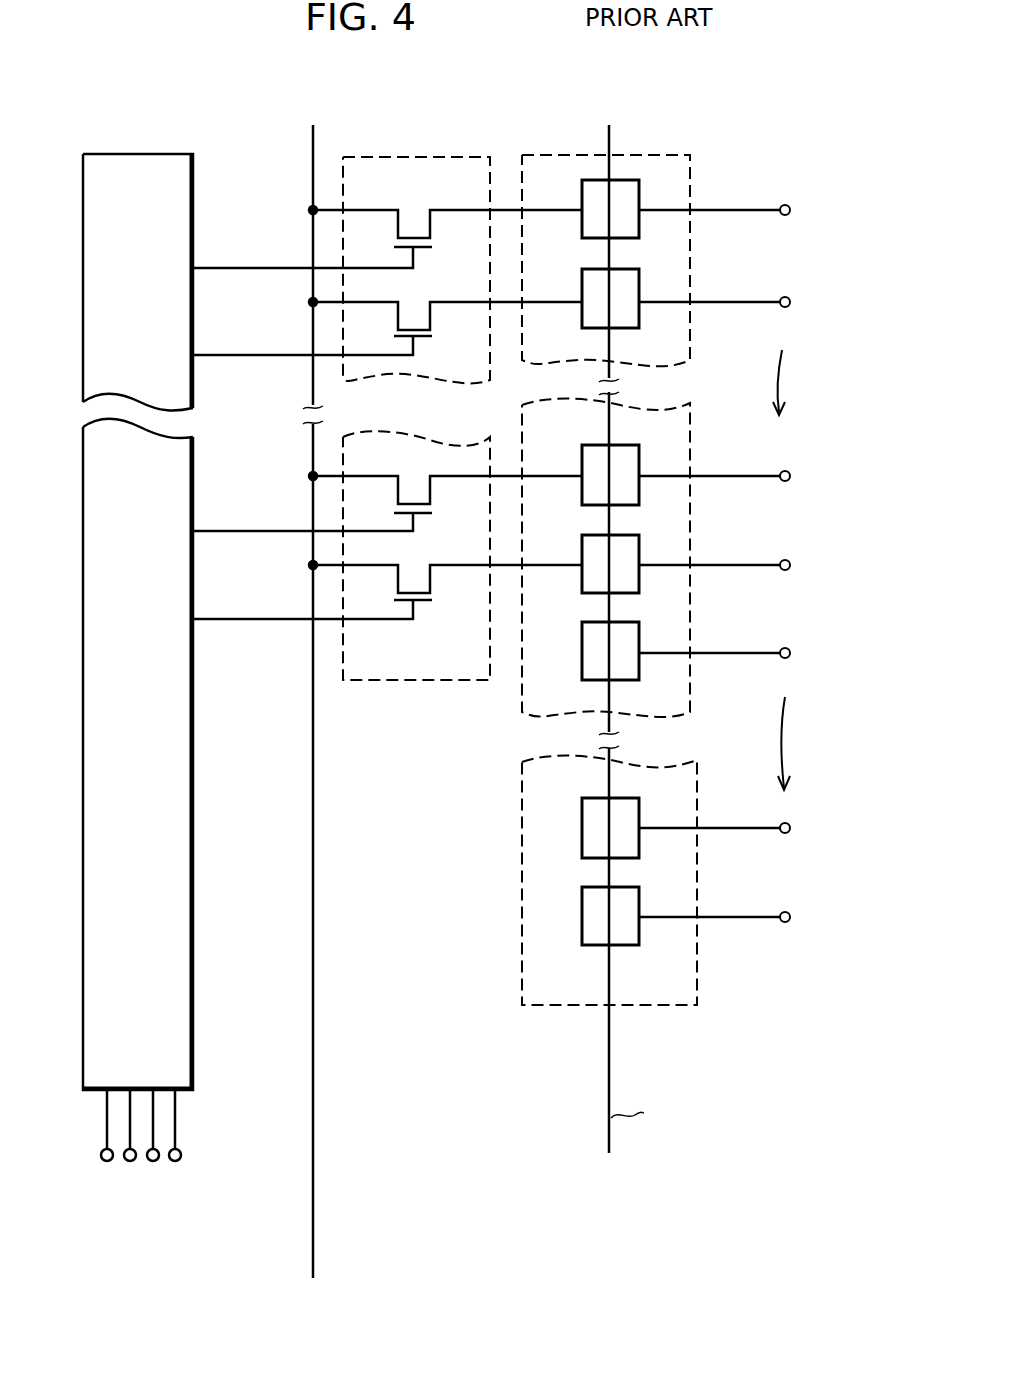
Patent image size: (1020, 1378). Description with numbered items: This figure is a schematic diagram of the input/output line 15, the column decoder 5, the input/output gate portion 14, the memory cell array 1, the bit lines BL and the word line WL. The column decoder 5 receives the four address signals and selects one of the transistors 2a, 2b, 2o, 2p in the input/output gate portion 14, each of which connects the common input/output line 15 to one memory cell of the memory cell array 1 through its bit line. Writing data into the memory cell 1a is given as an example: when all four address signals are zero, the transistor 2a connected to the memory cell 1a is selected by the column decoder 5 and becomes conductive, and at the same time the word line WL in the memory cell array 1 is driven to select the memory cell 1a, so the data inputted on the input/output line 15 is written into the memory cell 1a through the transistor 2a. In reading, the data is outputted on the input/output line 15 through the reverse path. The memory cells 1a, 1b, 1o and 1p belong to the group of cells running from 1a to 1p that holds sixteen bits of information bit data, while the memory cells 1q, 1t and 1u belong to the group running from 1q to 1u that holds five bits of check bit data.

The column decoder 5 is at (137, 152).
The input/output line 15 is at (314, 1120).
The input/output gate portion 14 is at (393, 157).
The transistor 2a is at (430, 228).
The transistor 2b is at (430, 318).
The transistor 2o is at (430, 490).
The transistor 2p is at (430, 586).
The memory cell array 1 is at (611, 153).
The memory cell 1a is at (639, 222).
The memory cell 1b is at (639, 310).
The memory cell 1o is at (639, 488).
The memory cell 1p is at (639, 580).
The memory cell 1q is at (639, 668).
The memory cell 1t is at (639, 838).
The memory cell 1u is at (639, 928).